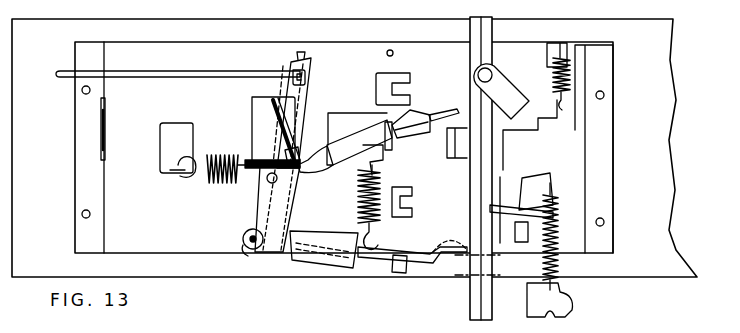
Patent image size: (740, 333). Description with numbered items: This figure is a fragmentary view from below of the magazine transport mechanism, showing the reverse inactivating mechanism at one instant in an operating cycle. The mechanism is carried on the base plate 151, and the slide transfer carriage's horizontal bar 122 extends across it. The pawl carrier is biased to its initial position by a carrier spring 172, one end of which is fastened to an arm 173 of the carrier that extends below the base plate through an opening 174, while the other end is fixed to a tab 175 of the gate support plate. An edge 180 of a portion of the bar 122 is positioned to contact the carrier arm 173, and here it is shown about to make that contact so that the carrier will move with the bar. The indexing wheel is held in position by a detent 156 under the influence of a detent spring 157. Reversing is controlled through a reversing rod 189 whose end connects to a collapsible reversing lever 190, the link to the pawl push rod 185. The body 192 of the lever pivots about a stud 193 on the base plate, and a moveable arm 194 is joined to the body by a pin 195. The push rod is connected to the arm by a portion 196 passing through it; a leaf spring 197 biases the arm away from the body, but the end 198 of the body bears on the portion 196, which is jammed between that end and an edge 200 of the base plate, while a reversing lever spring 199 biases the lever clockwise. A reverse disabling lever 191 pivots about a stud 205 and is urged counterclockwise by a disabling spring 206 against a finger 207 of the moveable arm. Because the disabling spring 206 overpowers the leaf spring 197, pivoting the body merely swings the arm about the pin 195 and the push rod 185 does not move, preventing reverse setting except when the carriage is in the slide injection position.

The base plate 151 is at (180, 42).
The reversing rod 189 is at (142, 78).
The collapsible reversing lever 190 is at (314, 70).
The leaf spring 197 is at (300, 95).
The stud 205 is at (428, 118).
The reverse disabling lever 191 is at (418, 134).
The finger 207 is at (332, 135).
The stud 193 is at (253, 145).
The reversing lever spring 199 is at (204, 172).
The pin 195 is at (265, 178).
The body 192 is at (258, 199).
The portion of push rod 196 is at (243, 238).
The edge of base plate 200 is at (248, 256).
The end of body 198 is at (262, 258).
The moveable arm 194 is at (301, 202).
The disabling spring 206 is at (384, 215).
The pawl push rod 185 is at (375, 266).
The horizontal bar 122 is at (470, 300).
The edge 180 is at (490, 204).
The detent 156 is at (553, 44).
The detent spring 157 is at (556, 80).
The opening 174 is at (568, 132).
The arm 173 is at (545, 176).
The carrier spring 172 is at (560, 262).
The tab 175 is at (573, 302).